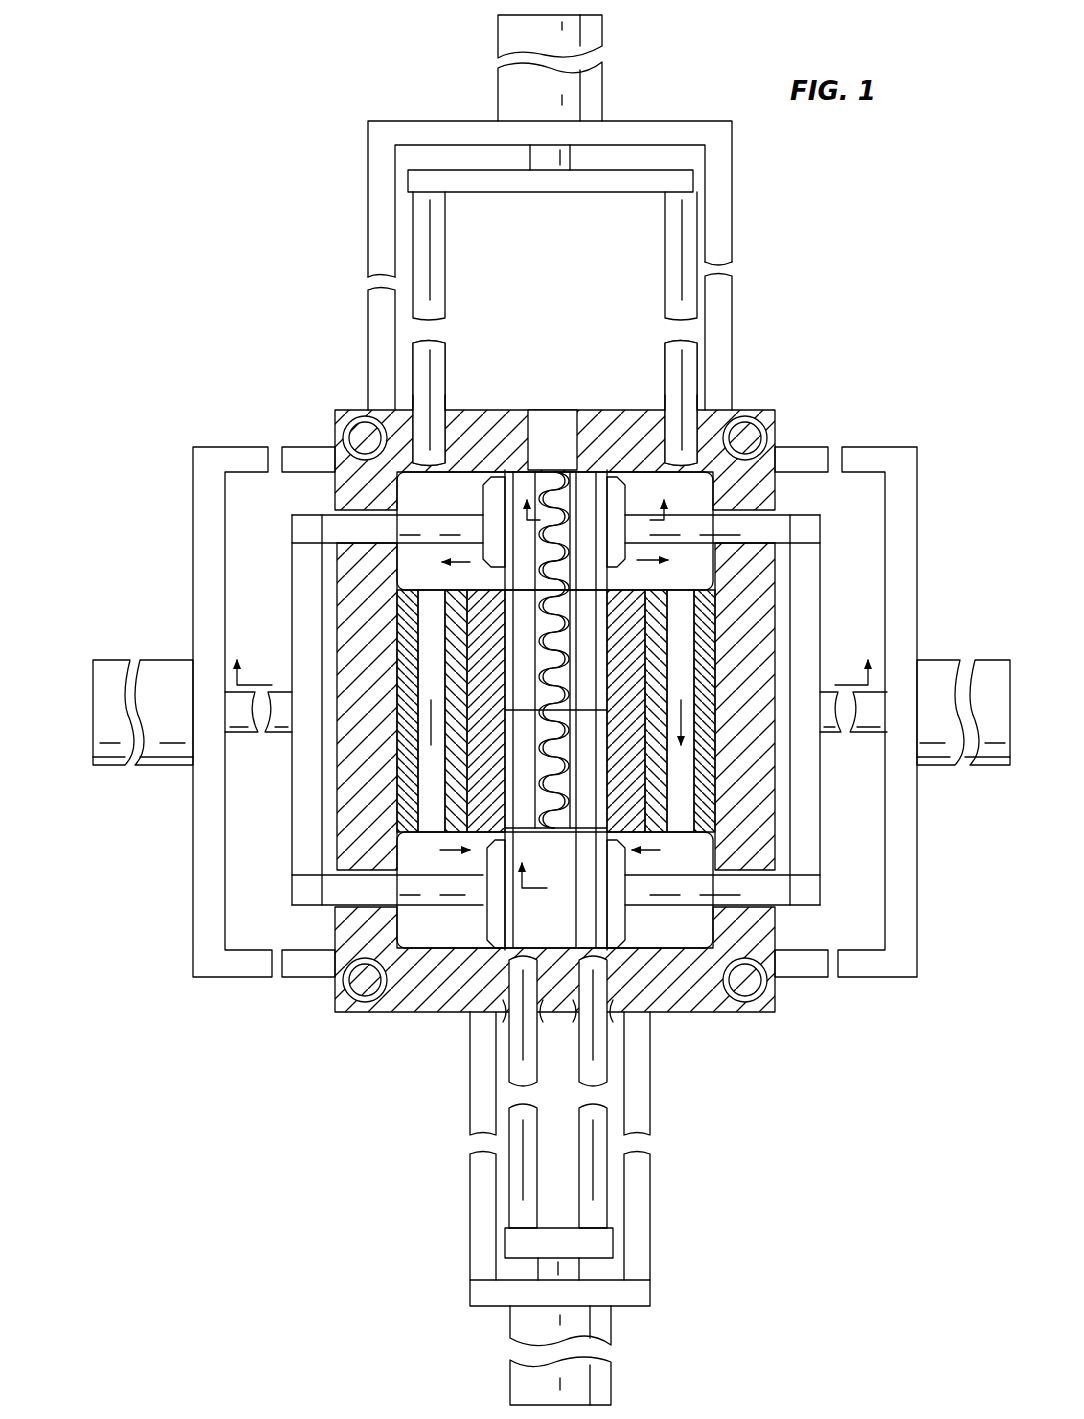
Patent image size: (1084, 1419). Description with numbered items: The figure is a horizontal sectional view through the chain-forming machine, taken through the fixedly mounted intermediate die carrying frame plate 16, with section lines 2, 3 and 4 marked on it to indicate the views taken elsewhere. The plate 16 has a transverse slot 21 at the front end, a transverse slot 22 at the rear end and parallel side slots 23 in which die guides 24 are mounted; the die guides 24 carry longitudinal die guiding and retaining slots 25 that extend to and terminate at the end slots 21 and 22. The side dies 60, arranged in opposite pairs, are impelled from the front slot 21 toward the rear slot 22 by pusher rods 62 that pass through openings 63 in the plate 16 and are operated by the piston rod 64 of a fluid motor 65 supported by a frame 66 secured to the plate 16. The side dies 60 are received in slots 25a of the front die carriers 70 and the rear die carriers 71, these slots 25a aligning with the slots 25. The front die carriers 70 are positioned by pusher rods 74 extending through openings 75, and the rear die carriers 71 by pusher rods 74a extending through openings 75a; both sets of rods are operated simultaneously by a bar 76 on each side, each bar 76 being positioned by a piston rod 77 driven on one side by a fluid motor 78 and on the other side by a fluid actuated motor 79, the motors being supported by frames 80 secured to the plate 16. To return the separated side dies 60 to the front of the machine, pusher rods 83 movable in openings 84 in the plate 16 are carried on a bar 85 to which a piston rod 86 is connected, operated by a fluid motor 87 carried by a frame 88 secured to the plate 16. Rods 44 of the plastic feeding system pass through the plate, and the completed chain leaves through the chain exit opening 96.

The section line 2- 2 is at (552, 649).
The section line 3- 3 is at (594, 496).
The section line 4- 4 is at (594, 861).
The intermediate die carrying frame plate 16 is at (555, 982).
The transverse slot 21 is at (705, 1013).
The transverse slot 22 is at (618, 485).
The side slots 23 is at (398, 610).
The die guides 24 is at (398, 647).
The die guiding and retaining slots 25 is at (420, 802).
The slots 25a is at (513, 913).
The rods 44 is at (345, 436).
The side dies 60 is at (522, 610).
The pusher rods 62 is at (510, 1058).
The openings 63 is at (502, 1012).
The piston rod 64 is at (575, 1268).
The fluid motor 65 is at (612, 1380).
The frame 66 is at (640, 1188).
The front die carriers 70 is at (487, 880).
The rear die carriers 71 is at (487, 486).
The pusher rods 74 is at (337, 898).
The pusher rods 74a is at (330, 520).
The openings 75 is at (340, 887).
The openings 75a is at (345, 543).
The bar 76 is at (300, 782).
The piston rod 77 is at (282, 736).
The fluid motor 78 is at (162, 665).
The fluid actuated motor 79 is at (980, 662).
The frames 80 is at (197, 882).
The pusher rods 83 is at (445, 306).
The openings 84 is at (455, 426).
The bar 85 is at (488, 193).
The piston rod 86 is at (565, 150).
The fluid motor 87 is at (597, 96).
The frame 88 is at (725, 186).
The chain exit opening 96 is at (540, 410).